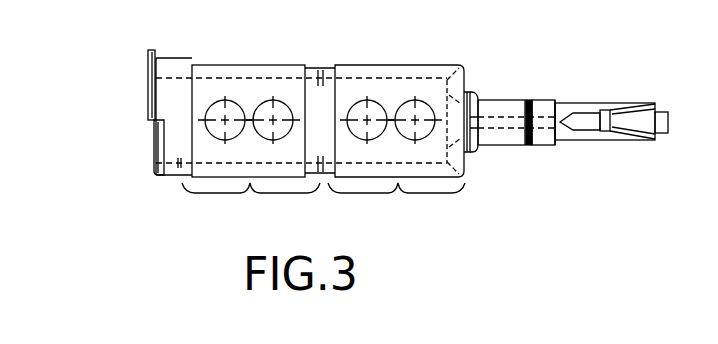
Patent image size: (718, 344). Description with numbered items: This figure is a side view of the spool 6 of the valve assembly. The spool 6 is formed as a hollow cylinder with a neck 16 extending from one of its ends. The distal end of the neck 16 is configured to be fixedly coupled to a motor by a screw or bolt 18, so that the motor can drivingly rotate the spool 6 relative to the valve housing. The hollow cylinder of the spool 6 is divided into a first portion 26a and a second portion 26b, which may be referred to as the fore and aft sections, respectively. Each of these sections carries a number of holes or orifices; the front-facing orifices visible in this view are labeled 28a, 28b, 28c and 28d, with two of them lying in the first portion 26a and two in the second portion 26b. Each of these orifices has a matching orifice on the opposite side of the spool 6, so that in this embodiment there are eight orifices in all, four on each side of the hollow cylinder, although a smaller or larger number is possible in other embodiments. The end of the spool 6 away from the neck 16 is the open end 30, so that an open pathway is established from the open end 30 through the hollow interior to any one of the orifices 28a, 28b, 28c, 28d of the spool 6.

The spool 6 is at (460, 220).
The neck 16 is at (505, 101).
The screw or bolt 18 is at (664, 110).
The first portion 26a is at (396, 144).
The second portion 26b is at (251, 144).
The orifice 28a is at (426, 103).
The orifice 28b is at (378, 103).
The orifice 28c is at (259, 105).
The orifice 28d is at (211, 105).
The open end 30 is at (148, 127).